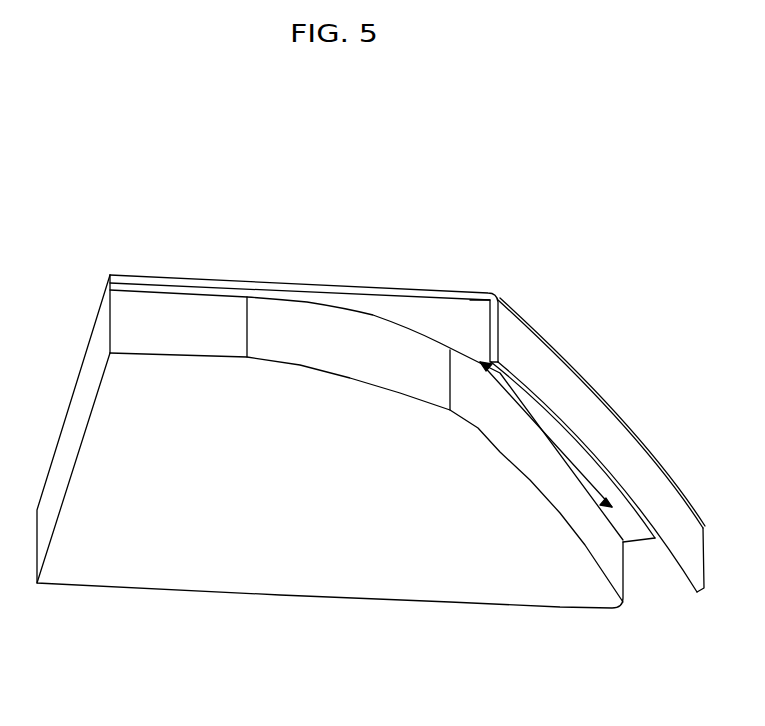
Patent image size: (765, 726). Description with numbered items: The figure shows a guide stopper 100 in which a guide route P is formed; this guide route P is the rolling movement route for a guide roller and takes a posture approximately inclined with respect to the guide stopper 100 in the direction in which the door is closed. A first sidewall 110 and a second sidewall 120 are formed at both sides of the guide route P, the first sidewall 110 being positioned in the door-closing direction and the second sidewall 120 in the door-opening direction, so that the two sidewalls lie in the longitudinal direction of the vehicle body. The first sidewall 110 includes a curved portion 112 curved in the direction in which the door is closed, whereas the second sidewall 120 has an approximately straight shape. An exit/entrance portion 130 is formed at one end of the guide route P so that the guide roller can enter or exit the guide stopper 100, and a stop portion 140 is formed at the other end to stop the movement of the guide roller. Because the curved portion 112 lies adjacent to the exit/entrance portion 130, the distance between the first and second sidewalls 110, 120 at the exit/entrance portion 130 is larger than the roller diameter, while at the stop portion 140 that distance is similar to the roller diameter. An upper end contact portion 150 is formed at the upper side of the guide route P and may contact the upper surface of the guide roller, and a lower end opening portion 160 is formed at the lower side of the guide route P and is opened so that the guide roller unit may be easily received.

The guide stopper 100 is at (372, 413).
The first sidewall 110 is at (520, 443).
The curved portion 112 is at (298, 338).
The second sidewall 120 is at (628, 453).
The exit/entrance portion 130 is at (487, 331).
The stop portion 140 is at (660, 567).
The upper end contact portion 150 is at (408, 312).
The lower end opening portion 160 is at (568, 498).
The guide route P is at (550, 430).